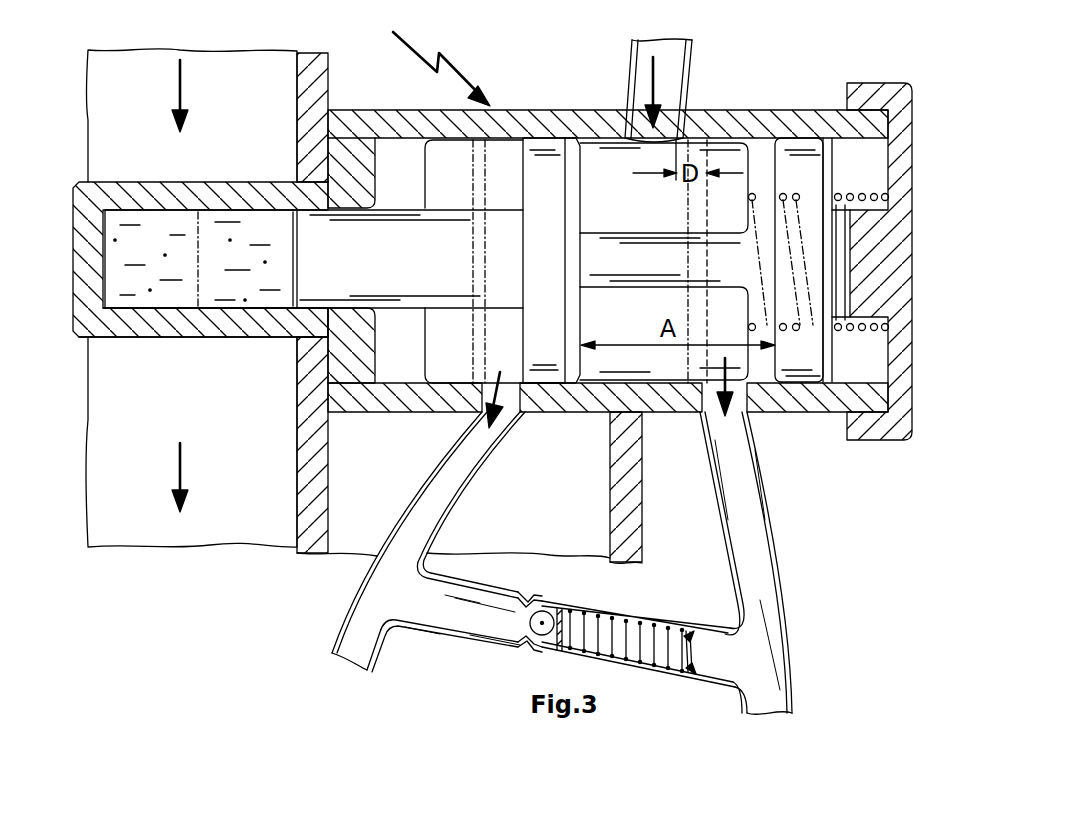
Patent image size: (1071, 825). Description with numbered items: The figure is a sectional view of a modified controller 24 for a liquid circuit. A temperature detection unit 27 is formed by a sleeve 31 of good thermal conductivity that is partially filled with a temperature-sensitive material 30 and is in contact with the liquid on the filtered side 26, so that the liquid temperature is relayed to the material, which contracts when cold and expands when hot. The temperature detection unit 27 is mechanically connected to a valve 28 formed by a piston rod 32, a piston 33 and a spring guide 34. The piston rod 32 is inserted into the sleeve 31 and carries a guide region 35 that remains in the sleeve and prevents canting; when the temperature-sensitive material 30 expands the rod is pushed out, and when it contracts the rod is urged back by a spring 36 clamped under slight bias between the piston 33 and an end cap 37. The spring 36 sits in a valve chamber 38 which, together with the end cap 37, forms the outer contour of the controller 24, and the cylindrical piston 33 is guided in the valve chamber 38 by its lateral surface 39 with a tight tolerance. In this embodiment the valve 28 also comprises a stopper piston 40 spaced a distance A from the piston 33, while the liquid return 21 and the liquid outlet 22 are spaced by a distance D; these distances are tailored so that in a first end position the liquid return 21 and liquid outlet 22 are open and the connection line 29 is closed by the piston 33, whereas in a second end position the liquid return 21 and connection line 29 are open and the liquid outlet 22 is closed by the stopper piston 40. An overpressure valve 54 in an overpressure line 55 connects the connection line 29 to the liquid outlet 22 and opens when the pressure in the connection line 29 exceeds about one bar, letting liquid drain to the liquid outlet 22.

The liquid return 21 is at (686, 80).
The liquid outlet 22 is at (742, 454).
The controller 24 is at (433, 55).
The filtered side 26 is at (126, 102).
The temperature detection unit 27 is at (213, 178).
The valve 28 is at (543, 393).
The connection line 29 is at (456, 447).
The temperature-sensitive material 30 is at (232, 292).
The sleeve 31 is at (125, 324).
The piston rod 32 is at (402, 298).
The piston 33 is at (558, 206).
The spring guide 34 is at (845, 195).
The guide region 35 is at (372, 220).
The spring 36 is at (852, 332).
The end cap 37 is at (870, 432).
The valve chamber 38 is at (400, 120).
The lateral surface 39 is at (543, 138).
The stopper piston 40 is at (800, 155).
The overpressure valve 54 is at (553, 609).
The overpressure line 55 is at (471, 618).